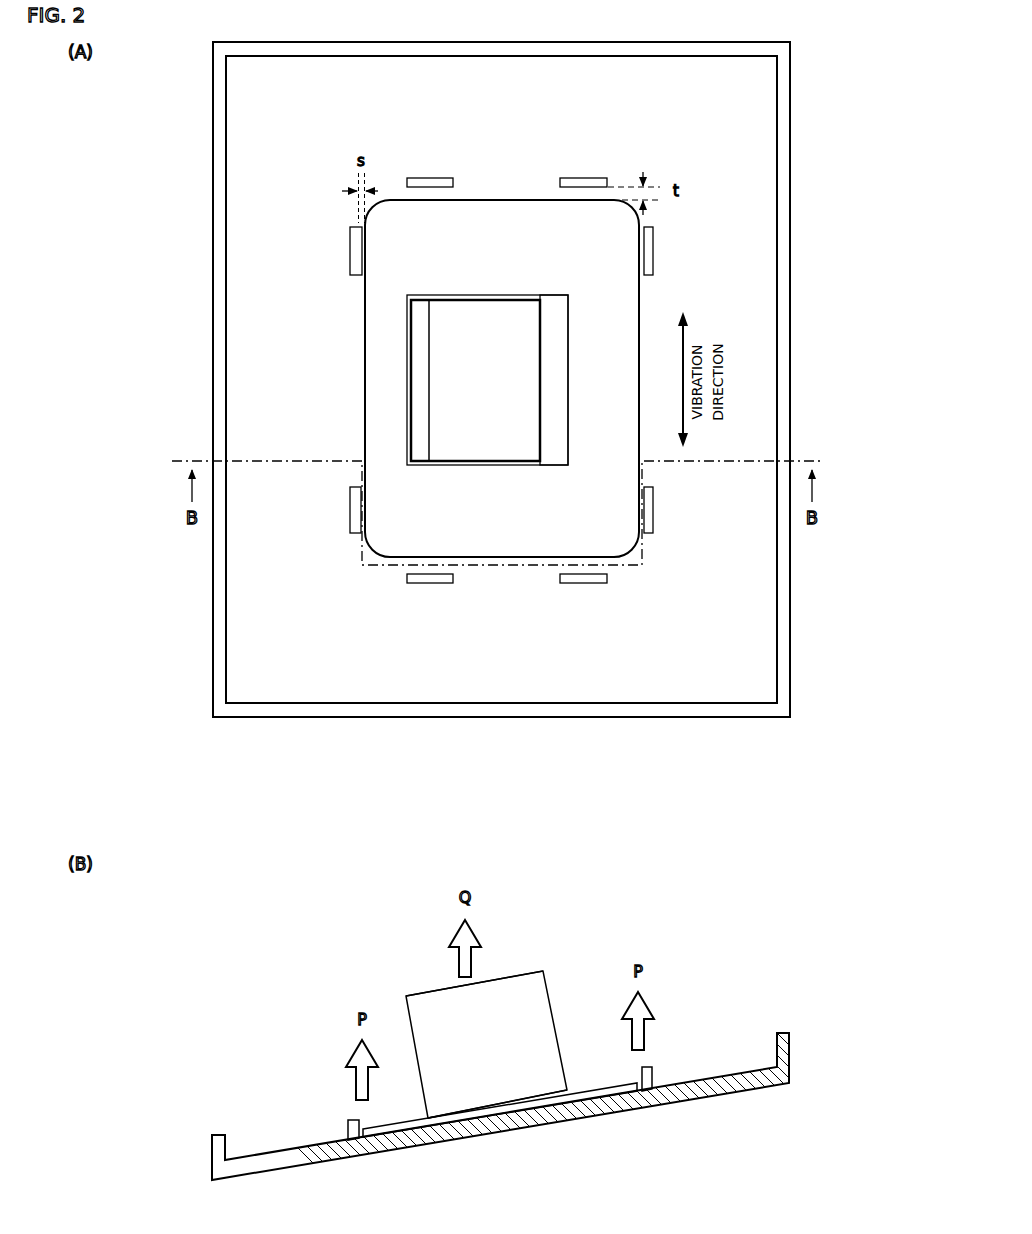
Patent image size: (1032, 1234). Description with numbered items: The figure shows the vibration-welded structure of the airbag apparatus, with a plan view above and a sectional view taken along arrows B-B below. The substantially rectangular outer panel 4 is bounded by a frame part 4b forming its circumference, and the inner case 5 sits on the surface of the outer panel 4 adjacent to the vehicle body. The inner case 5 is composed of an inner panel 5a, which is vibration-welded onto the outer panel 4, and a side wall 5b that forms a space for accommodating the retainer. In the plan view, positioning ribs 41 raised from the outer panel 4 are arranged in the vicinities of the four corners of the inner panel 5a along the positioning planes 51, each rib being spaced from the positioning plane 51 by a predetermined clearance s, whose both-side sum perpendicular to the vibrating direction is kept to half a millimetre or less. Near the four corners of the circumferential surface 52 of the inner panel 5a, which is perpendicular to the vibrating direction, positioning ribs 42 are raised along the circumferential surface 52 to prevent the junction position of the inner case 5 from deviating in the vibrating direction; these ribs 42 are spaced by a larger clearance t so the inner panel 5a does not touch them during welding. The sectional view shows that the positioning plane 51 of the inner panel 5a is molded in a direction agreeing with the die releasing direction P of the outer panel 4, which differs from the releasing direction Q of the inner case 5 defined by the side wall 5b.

The outer panel 4 is at (265, 597).
The frame part 4b is at (213, 158).
The inner case 5 is at (342, 334).
The inner panel 5a is at (383, 371).
The side wall 5b is at (560, 340).
The positioning rib 41 is at (348, 250).
The positioning rib 42 is at (430, 178).
The positioning plane 51 is at (360, 300).
The circumferential surface 52 is at (498, 200).